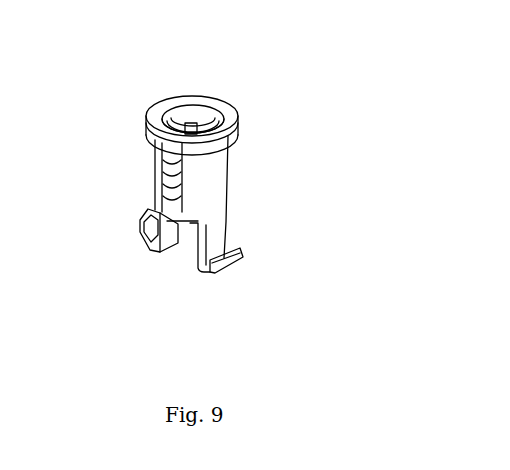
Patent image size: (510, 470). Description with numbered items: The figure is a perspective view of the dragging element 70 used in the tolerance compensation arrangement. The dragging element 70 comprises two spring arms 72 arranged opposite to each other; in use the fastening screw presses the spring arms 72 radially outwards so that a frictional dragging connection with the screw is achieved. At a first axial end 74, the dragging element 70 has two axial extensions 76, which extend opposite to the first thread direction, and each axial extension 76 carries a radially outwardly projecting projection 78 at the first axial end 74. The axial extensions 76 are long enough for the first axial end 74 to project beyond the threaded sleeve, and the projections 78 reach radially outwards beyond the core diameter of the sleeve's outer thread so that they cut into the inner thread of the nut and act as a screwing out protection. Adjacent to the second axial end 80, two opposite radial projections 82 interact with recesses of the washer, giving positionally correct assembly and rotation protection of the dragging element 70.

The dragging element 70 is at (410, 33).
The second axial end 80 is at (153, 97).
The radial projections 82 is at (153, 143).
The spring arms 72 is at (176, 181).
The first axial end 74 is at (150, 249).
The axial extensions 76 is at (213, 232).
The projections 78 is at (236, 262).